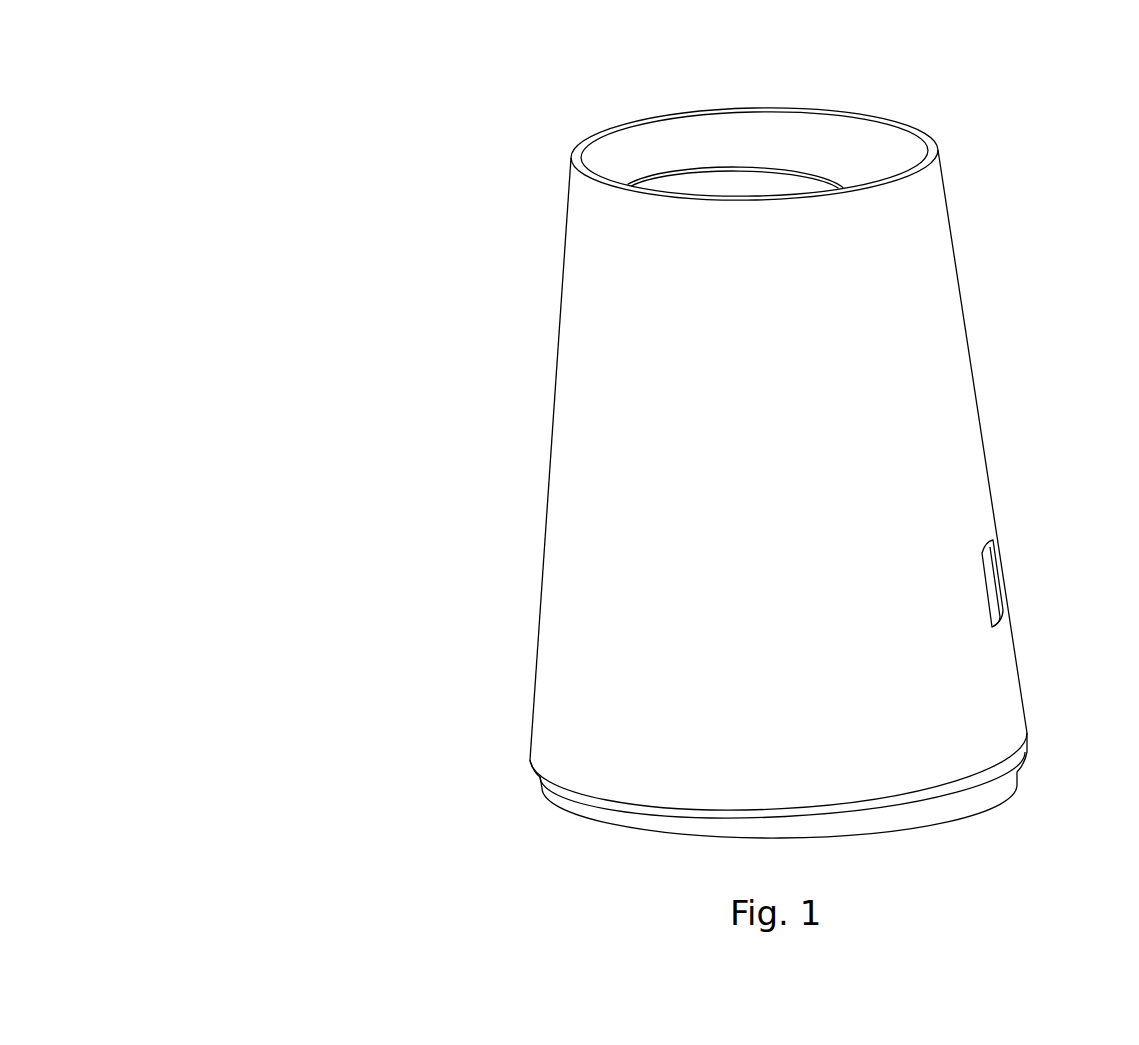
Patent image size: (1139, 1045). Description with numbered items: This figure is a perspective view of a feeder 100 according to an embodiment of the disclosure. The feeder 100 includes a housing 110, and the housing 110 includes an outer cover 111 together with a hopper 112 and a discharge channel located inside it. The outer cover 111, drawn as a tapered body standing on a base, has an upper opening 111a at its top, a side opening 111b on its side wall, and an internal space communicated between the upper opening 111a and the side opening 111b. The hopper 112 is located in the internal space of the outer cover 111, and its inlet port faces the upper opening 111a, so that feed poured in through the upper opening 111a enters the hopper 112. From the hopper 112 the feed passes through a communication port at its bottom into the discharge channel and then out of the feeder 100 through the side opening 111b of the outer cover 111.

The feeder 100 is at (164, 40).
The housing 110 is at (972, 130).
The outer cover 111 is at (947, 313).
The upper opening 111a is at (864, 122).
The side opening 111b is at (1008, 583).
The hopper 112 is at (807, 172).